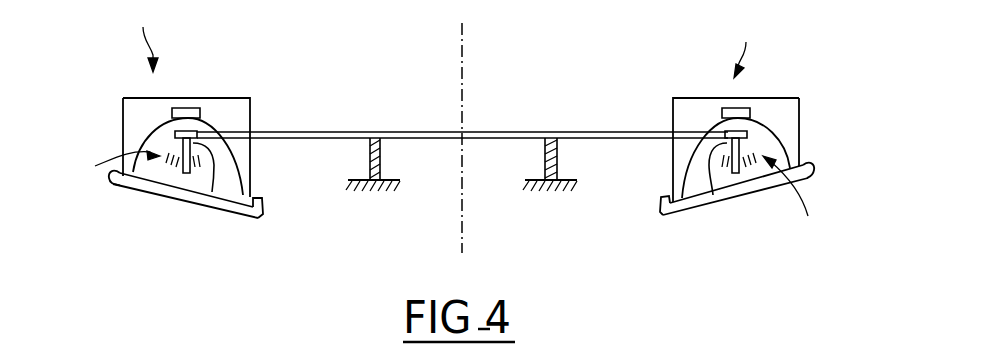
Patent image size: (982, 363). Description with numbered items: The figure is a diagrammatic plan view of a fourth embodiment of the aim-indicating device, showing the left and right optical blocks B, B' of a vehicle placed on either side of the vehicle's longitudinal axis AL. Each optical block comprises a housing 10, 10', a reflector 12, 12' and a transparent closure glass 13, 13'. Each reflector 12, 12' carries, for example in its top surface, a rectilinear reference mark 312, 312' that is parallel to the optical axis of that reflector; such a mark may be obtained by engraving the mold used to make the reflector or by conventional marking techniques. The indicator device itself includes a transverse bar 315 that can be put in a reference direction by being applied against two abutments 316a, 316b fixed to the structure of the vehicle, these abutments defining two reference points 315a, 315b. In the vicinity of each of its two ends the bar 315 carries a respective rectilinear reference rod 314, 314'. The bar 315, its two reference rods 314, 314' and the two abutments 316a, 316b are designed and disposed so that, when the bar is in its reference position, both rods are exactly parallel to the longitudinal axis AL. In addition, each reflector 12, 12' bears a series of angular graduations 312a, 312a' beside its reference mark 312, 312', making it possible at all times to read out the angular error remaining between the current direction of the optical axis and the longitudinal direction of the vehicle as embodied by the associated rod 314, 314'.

The housing 10 is at (153, 141).
The reflector 12 is at (164, 119).
The transparent closure glass 13 is at (275, 233).
The rectilinear reference mark 312 is at (182, 203).
The angular graduations 312a is at (100, 169).
The rectilinear reference rod 314 is at (214, 201).
The transverse bar 315 is at (422, 130).
The reference point 315a is at (366, 142).
The abutment 316a is at (384, 157).
The reference point 315b is at (545, 142).
The abutment 316b is at (558, 160).
The housing 10' is at (708, 133).
The reflector 12' is at (729, 118).
The transparent closure glass 13' is at (720, 230).
The rectilinear reference mark 312' is at (733, 210).
The angular graduations 312a' is at (814, 199).
The rectilinear reference rod 314' is at (789, 149).
The left optical block B is at (147, 36).
The right optical block B' is at (751, 46).
The longitudinal axis AL is at (464, 42).